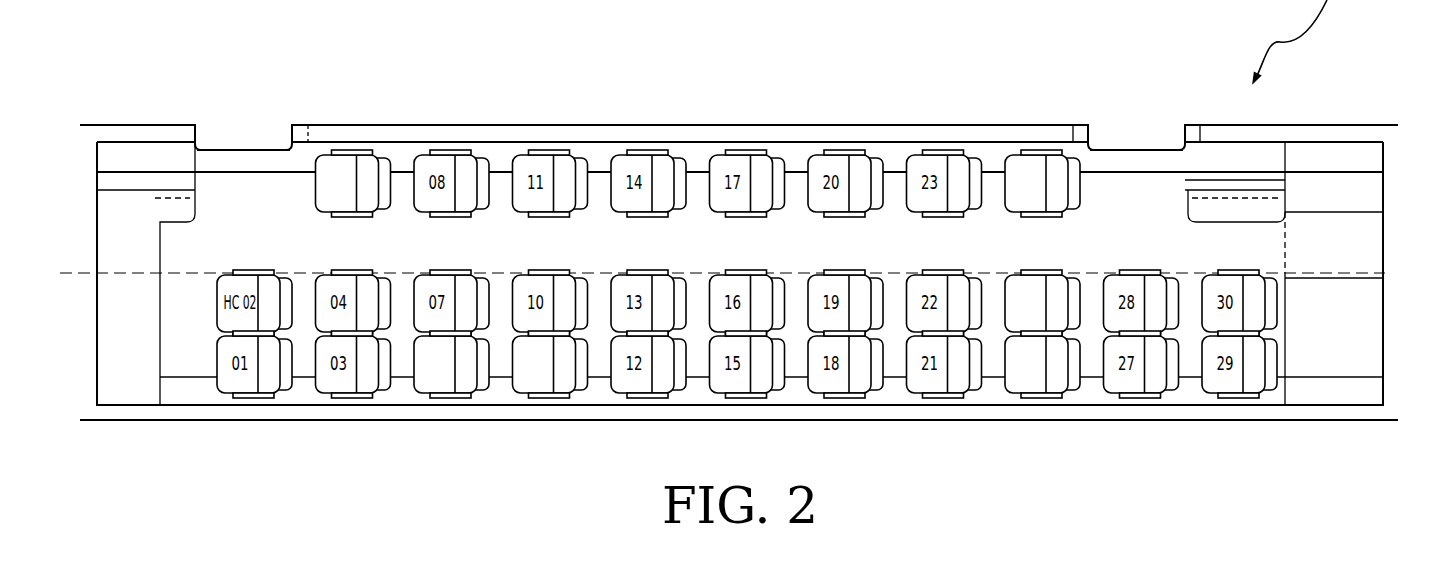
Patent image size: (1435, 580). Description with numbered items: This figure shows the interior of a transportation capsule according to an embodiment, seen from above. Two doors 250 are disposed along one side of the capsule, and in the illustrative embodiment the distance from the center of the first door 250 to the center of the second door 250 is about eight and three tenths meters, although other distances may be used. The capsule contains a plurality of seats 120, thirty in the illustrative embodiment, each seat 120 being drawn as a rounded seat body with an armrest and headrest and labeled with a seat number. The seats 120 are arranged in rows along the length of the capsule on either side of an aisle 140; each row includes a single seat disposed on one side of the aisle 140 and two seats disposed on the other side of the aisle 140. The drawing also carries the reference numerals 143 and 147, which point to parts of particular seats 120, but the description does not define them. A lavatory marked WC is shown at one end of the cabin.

The seat 120 is at (458, 151).
The aisle 140 is at (733, 253).
The seat backrest 143 is at (1068, 151).
The seat armrest 147 is at (1040, 398).
The door 250 is at (247, 150).